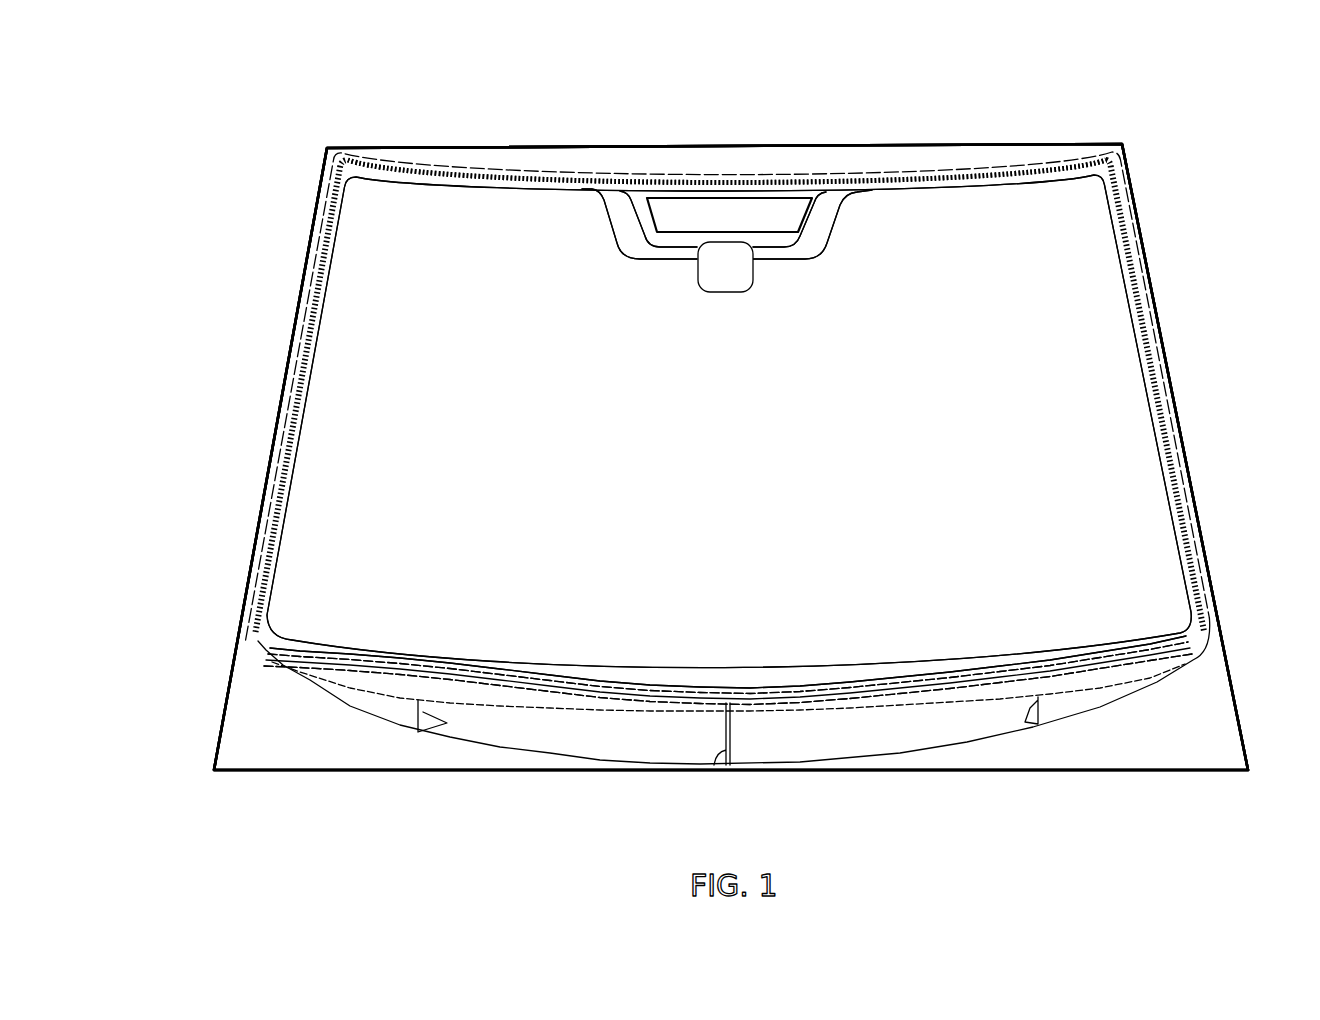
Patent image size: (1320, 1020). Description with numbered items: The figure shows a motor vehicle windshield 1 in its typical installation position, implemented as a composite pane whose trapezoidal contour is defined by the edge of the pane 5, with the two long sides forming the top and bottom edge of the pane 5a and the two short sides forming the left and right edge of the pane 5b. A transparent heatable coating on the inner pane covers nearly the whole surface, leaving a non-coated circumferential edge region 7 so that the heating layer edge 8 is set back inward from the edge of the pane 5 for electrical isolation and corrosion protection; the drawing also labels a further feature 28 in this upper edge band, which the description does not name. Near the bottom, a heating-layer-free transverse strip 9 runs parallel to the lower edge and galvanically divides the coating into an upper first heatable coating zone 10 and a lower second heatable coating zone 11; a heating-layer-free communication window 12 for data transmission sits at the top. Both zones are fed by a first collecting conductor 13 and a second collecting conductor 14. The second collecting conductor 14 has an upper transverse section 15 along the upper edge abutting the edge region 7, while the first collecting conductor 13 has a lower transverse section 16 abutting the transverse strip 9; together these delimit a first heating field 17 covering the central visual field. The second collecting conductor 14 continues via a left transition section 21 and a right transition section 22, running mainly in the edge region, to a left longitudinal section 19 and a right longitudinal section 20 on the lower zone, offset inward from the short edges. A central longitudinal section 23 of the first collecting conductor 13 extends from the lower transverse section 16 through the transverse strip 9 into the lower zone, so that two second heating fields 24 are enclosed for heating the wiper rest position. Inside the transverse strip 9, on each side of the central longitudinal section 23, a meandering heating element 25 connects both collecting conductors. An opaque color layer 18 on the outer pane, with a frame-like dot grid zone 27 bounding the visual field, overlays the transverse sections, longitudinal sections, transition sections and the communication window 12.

The windshield 1 is at (330, 135).
The edge of the pane 5 is at (731, 420).
The top and bottom edge of the pane 5a is at (508, 147).
The left and right edge of the pane 5b is at (278, 417).
The edge region 7 is at (432, 155).
The heating layer edge 8 is at (557, 170).
The transverse strip 9 is at (510, 707).
The first heatable coating zone 10 is at (352, 233).
The second heatable coating zone 11 is at (631, 752).
The communication window 12 is at (730, 220).
The first collecting conductor 13 is at (955, 688).
The second collecting conductor 14 is at (813, 180).
The upper transverse section 15 is at (745, 172).
The lower transverse section 16 is at (728, 737).
The first heating field 17 is at (494, 357).
The opaque color layer 18 is at (835, 213).
The left longitudinal section 19 is at (445, 723).
The right longitudinal section 20 is at (1025, 722).
The left transition section 21 is at (298, 367).
The right transition section 22 is at (1145, 322).
The central longitudinal section 23 is at (726, 747).
The second heating fields 24 is at (692, 751).
The heating element 25 is at (590, 707).
The dot grid zone 27 is at (728, 461).
The upper band 28 is at (403, 168).